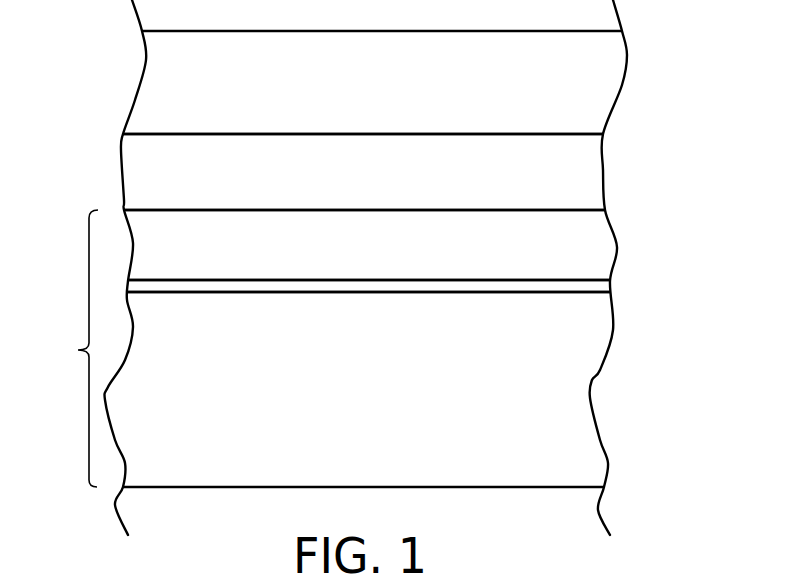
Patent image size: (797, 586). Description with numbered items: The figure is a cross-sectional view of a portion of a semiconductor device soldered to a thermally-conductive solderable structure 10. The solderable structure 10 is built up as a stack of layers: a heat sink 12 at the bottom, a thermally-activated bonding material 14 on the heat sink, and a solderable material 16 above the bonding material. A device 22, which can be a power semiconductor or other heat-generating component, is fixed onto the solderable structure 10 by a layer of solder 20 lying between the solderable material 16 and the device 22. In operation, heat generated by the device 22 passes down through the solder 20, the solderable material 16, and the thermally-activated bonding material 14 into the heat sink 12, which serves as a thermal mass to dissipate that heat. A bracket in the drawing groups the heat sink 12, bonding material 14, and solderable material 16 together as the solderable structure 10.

The thermally-conductive solderable structure 10 is at (67, 348).
The heat sink 12 is at (590, 398).
The thermally-activated bonding material 14 is at (612, 290).
The solderable material 16 is at (617, 250).
The solder 20 is at (604, 168).
The device 22 is at (622, 83).